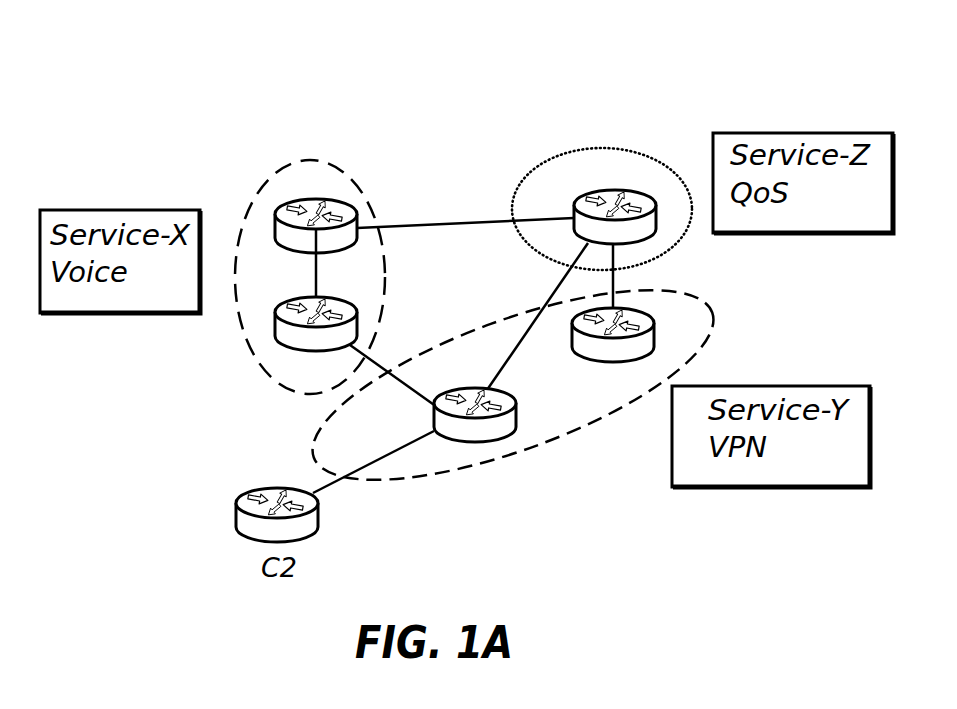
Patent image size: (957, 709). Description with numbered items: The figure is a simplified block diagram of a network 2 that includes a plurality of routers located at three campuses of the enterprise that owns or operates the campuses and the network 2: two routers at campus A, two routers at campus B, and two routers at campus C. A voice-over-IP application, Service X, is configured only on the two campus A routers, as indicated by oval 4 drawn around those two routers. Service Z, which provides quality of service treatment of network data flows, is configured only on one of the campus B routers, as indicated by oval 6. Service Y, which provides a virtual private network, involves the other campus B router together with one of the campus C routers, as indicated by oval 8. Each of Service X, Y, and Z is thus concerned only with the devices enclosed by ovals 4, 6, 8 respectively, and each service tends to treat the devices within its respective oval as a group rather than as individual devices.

The network 2 is at (402, 82).
The oval 4 is at (298, 158).
The oval 6 is at (577, 150).
The oval 8 is at (567, 432).